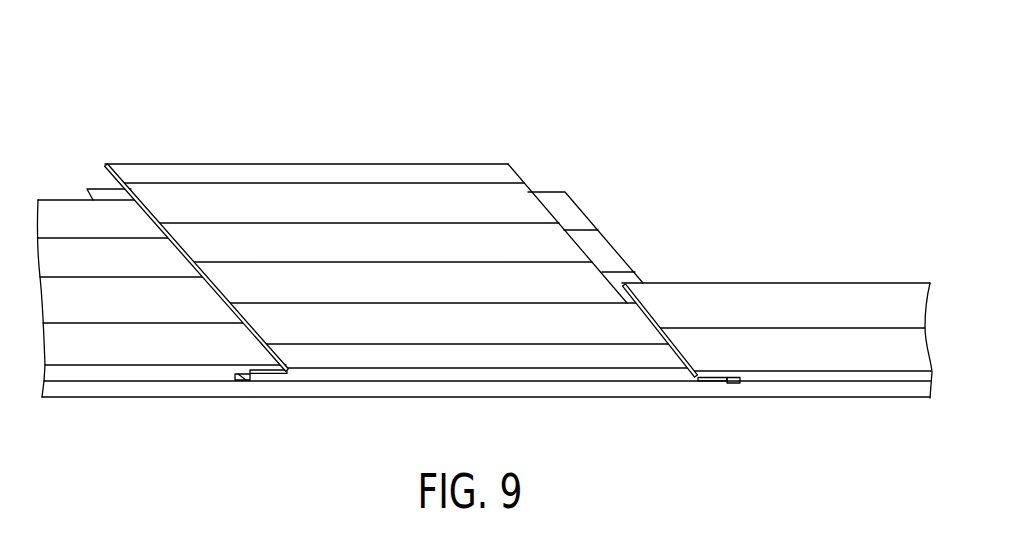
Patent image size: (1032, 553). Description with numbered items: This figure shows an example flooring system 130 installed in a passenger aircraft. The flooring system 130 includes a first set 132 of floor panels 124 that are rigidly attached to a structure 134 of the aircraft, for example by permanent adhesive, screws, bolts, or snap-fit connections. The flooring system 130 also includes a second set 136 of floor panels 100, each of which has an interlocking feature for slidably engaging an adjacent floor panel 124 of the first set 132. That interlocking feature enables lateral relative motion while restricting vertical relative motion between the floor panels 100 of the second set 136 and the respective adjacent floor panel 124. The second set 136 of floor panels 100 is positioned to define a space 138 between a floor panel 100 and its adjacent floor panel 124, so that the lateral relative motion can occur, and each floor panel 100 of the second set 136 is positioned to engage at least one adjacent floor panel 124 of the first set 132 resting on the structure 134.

The flooring system 130 is at (484, 239).
The second set of floor panels 136 is at (396, 129).
The first set of floor panels 132 is at (768, 270).
The floor panel 124 is at (80, 232).
The floor panel 100 is at (325, 213).
The space 138 is at (697, 374).
The structure 134 is at (733, 391).